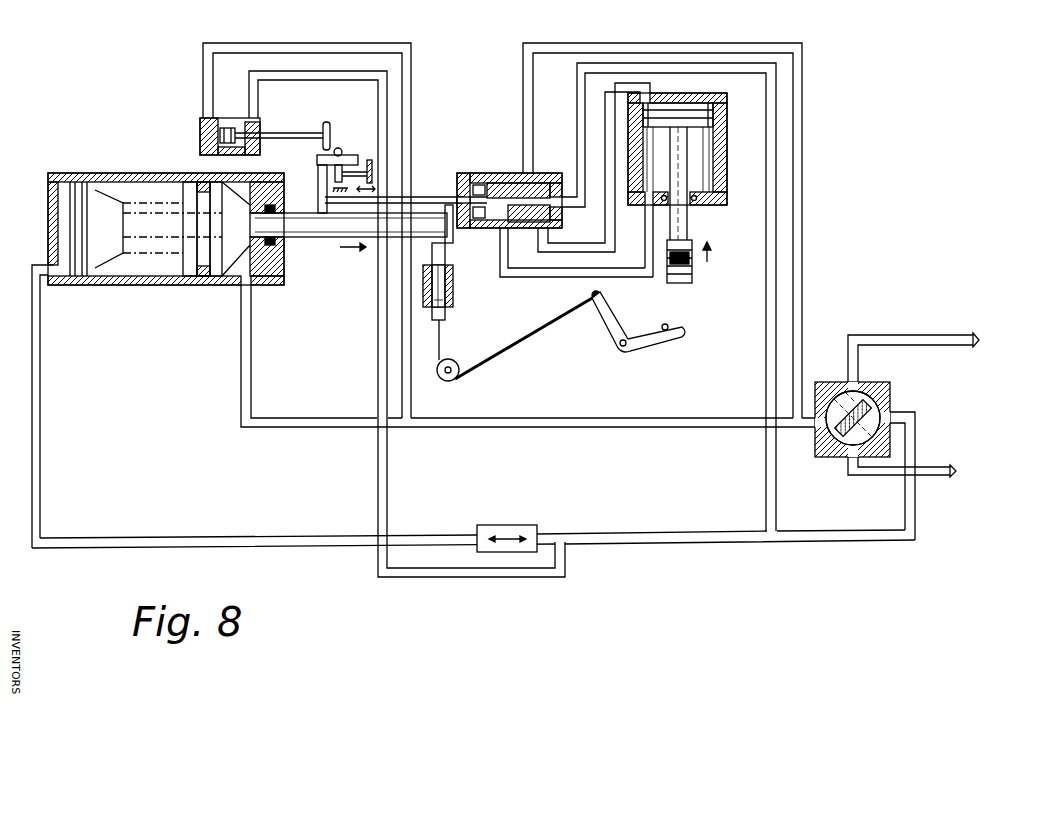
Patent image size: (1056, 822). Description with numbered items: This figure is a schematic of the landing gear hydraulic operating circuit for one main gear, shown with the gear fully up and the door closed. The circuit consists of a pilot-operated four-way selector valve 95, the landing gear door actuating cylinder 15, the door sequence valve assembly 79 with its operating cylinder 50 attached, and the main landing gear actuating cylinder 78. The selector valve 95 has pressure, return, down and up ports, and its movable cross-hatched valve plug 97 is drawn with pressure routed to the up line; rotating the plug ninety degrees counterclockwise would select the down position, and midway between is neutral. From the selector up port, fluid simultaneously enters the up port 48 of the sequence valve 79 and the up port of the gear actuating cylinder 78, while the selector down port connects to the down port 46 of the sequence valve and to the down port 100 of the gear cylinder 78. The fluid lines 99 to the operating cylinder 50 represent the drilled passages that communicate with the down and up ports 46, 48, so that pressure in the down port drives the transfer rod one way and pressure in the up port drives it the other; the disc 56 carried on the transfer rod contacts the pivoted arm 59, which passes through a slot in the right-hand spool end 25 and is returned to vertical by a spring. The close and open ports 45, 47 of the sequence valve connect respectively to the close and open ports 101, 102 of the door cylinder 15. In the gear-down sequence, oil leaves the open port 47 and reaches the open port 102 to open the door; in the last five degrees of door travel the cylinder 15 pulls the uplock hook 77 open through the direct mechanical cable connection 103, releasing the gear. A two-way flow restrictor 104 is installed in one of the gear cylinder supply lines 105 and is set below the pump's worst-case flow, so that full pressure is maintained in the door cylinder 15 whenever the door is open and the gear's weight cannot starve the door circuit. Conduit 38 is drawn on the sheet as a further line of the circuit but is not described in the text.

The gear actuating cylinder 78 is at (146, 172).
The conduit 38 is at (52, 268).
The down port of the gear actuating cylinder 100 is at (245, 280).
The fluid lines 99 is at (406, 318).
The operating cylinder 50 is at (200, 150).
The circular disc 56 is at (320, 142).
The arm 59 is at (340, 149).
The right-hand spool end 25 is at (318, 191).
The door sequence valve assembly 79 is at (468, 172).
The down port 46 is at (528, 173).
The up port 48 is at (567, 200).
The close port 45 is at (500, 232).
The close port of the door actuating cylinder 101 is at (648, 205).
The open port 47 is at (537, 228).
The open port of the door actuating cylinder 102 is at (645, 95).
The door actuating cylinder 15 is at (725, 163).
The uplock hook 77 is at (450, 253).
The cable connection 103 is at (545, 323).
The selector valve 95 is at (888, 392).
The valve plug 97 is at (827, 430).
The gear actuating cylinder supply line 105 is at (607, 538).
The two-way flow restrictor 104 is at (552, 530).